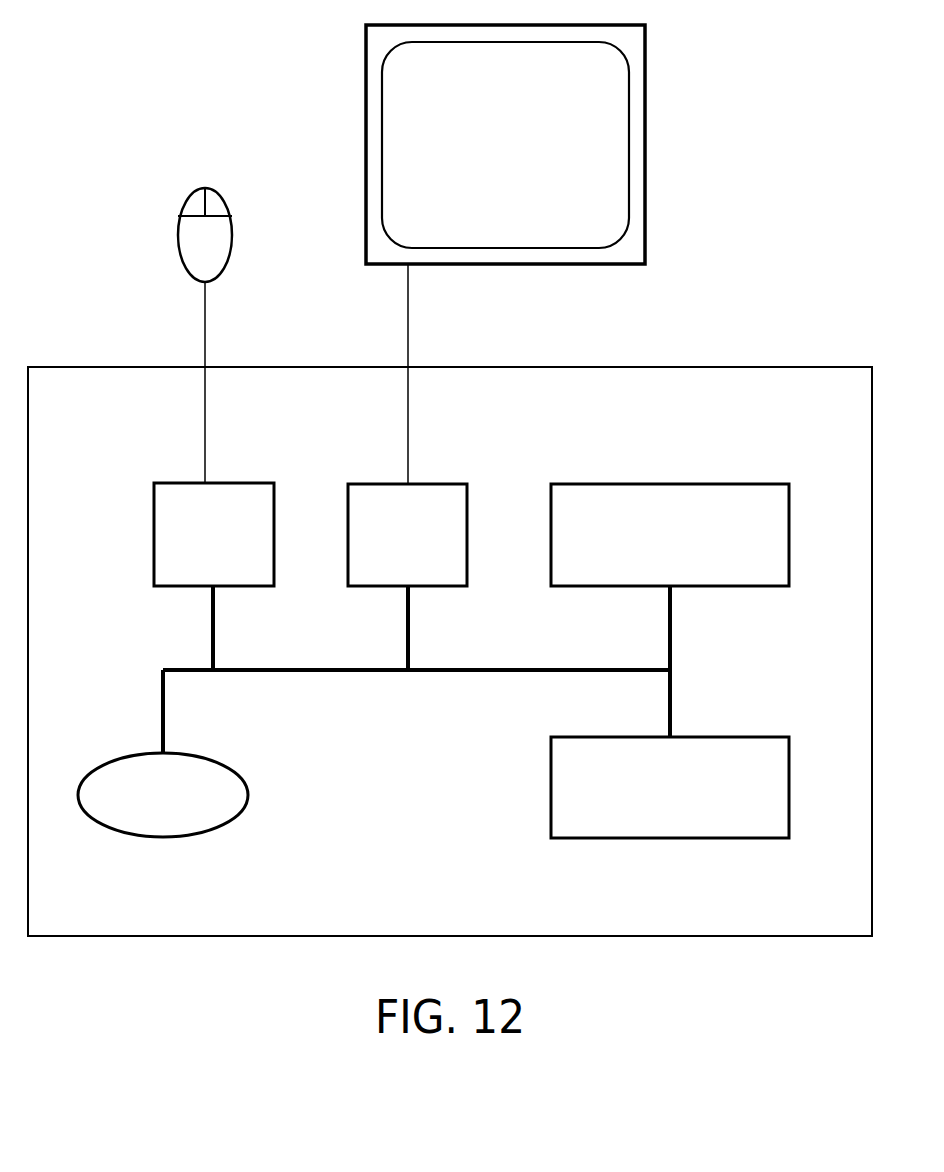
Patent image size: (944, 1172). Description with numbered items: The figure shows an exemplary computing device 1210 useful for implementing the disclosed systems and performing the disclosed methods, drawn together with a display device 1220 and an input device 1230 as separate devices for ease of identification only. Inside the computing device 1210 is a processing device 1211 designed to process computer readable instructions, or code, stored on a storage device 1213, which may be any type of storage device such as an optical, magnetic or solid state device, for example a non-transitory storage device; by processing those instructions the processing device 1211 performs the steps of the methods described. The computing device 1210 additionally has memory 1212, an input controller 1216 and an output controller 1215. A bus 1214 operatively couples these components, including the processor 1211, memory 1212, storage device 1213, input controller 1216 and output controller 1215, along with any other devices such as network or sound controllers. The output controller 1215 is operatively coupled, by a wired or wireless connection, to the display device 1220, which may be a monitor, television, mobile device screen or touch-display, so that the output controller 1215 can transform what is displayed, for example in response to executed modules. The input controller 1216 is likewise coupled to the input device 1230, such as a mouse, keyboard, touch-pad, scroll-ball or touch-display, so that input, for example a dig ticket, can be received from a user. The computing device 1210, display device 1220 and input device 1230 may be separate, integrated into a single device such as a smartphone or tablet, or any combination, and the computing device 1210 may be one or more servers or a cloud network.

The computing device 1210 is at (749, 367).
The processing device 1211 is at (687, 484).
The memory 1212 is at (750, 737).
The storage device 1213 is at (250, 795).
The bus 1214 is at (497, 667).
The output controller 1215 is at (442, 484).
The input controller 1216 is at (247, 483).
The display device 1220 is at (646, 143).
The input device 1230 is at (222, 188).